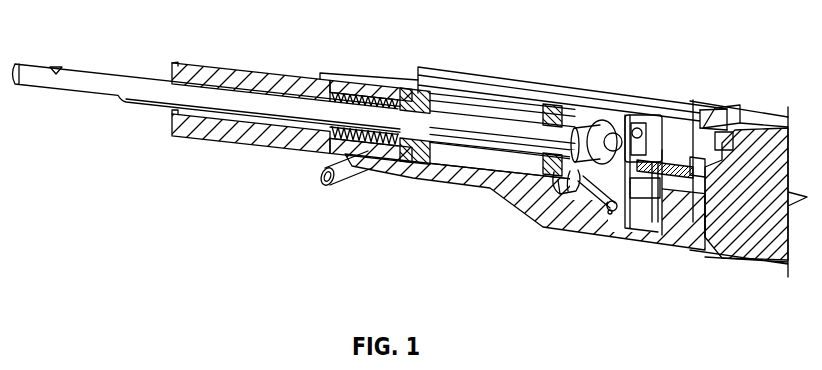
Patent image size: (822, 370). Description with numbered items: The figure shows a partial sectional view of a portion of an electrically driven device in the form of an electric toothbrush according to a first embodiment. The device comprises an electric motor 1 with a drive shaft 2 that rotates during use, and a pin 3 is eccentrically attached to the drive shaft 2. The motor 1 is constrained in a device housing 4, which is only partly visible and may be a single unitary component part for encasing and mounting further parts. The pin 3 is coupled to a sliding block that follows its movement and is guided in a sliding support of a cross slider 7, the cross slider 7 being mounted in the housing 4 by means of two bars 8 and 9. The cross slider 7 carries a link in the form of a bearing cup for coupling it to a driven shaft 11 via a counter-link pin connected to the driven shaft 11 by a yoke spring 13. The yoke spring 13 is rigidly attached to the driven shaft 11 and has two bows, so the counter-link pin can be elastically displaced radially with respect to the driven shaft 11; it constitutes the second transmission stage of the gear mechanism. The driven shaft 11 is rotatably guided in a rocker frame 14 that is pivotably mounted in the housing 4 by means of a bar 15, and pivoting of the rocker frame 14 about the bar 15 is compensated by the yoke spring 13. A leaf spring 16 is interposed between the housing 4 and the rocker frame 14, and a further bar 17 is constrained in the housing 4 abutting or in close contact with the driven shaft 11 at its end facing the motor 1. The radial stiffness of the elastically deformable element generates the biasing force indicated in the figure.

The electric motor 1 is at (773, 140).
The drive shaft 2 is at (677, 188).
The pin 3 is at (635, 176).
The device housing 4 is at (438, 67).
The cross slider 7 is at (622, 220).
The bar 8 is at (604, 215).
The bar 9 is at (667, 126).
The driven shaft 11 is at (138, 98).
The yoke spring 13 is at (563, 192).
The rocker frame 14 is at (198, 127).
The bar 15 is at (320, 176).
The leaf spring 16 is at (611, 98).
The further bar 17 is at (623, 142).